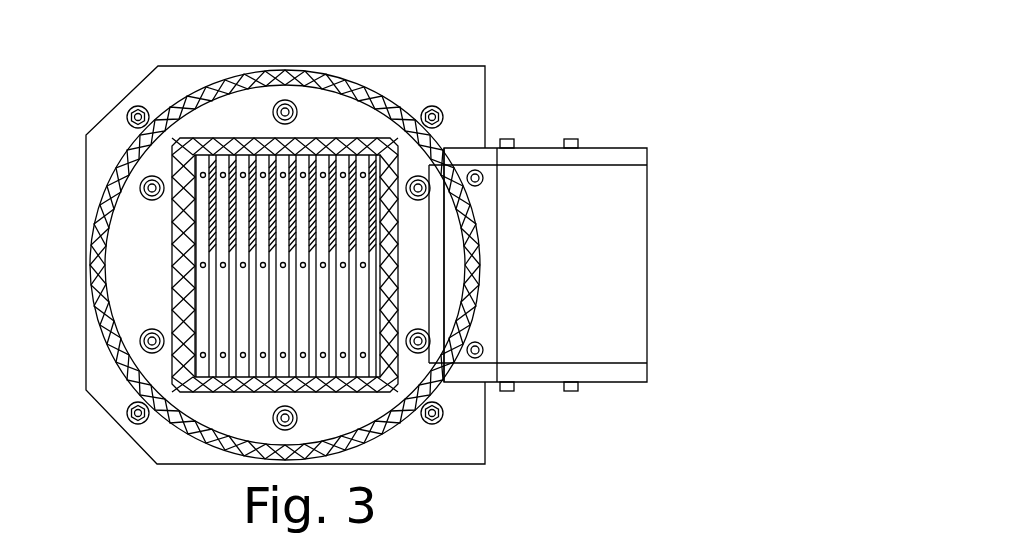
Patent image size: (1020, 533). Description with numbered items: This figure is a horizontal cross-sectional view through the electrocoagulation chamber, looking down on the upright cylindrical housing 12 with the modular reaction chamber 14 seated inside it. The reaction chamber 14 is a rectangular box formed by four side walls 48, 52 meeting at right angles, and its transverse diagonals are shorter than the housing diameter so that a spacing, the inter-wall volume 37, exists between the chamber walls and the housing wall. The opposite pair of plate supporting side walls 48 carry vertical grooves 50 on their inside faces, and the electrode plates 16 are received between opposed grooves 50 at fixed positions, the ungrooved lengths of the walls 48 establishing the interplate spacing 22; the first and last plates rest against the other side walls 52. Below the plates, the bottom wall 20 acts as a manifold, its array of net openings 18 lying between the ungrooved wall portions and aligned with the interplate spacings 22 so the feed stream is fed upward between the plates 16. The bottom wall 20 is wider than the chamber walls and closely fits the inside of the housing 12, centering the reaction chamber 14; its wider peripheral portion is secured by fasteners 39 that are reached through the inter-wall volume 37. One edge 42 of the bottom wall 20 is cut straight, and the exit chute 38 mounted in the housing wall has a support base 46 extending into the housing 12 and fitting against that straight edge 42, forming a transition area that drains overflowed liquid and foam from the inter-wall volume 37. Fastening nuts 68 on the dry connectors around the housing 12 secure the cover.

The housing 12 is at (297, 70).
The reaction chamber 14 is at (187, 133).
The electrode plates 16 is at (215, 326).
The net openings 18 is at (264, 357).
The bottom wall 20 is at (410, 158).
The interplate spacings 22 is at (265, 163).
The inter-wall volume 37 is at (128, 273).
The exit chute 38 is at (597, 253).
The fasteners 39 is at (140, 182).
The straight edge 42 is at (430, 285).
The support base 46 is at (447, 252).
The plate supporting side walls 48 is at (365, 140).
The vertical grooves 50 is at (315, 157).
The side walls 52 is at (172, 247).
The fastening nuts 68 is at (128, 114).